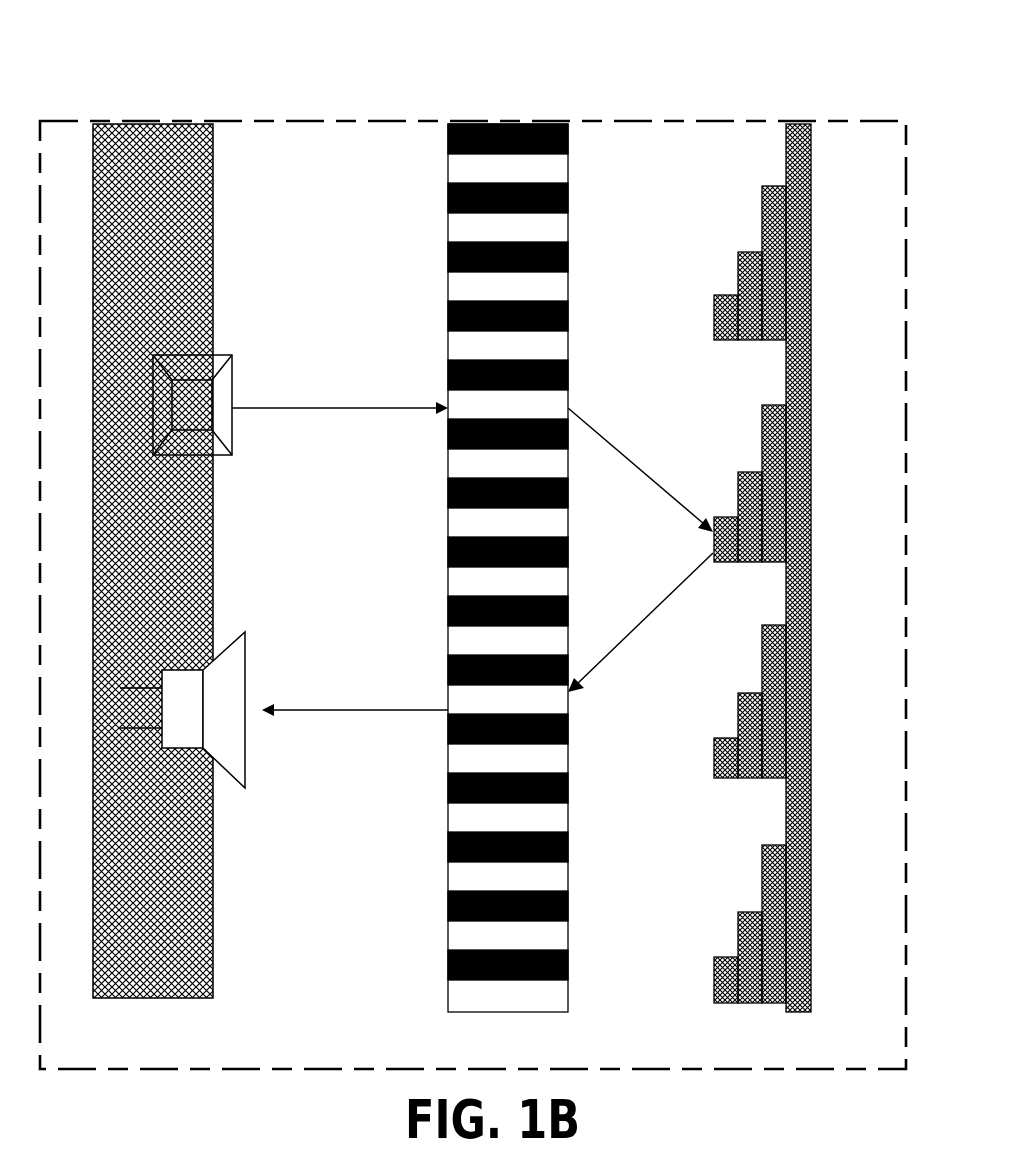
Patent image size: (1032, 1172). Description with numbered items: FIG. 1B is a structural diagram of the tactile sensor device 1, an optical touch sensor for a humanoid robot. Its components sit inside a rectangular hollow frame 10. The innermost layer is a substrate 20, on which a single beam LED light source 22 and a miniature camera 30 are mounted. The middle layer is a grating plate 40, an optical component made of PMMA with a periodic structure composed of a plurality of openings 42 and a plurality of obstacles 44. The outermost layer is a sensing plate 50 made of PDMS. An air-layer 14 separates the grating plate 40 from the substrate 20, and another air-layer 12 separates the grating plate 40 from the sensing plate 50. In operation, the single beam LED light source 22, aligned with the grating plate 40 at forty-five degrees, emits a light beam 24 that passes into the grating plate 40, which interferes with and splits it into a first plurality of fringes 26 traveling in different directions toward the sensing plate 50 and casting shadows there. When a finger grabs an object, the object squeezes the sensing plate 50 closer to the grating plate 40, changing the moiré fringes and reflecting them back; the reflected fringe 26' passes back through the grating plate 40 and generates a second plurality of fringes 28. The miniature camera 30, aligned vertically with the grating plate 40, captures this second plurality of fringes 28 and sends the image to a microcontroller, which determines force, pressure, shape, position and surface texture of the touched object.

The tactile sensor device 1 is at (208, 84).
The hollow frame 10 is at (775, 120).
The air-layer 12 is at (772, 508).
The air-layer 14 is at (479, 518).
The substrate 20 is at (213, 190).
The single beam LED light source 22 is at (200, 462).
The light beam 24 is at (348, 408).
The first plurality of fringes 26 is at (640, 495).
The reflected fringe 26' is at (640, 648).
The second plurality of fringes 28 is at (347, 712).
The miniature camera 30 is at (188, 750).
The grating plate 40 is at (608, 277).
The openings 42 is at (535, 875).
The obstacles 44 is at (540, 970).
The sensing plate 50 is at (808, 313).